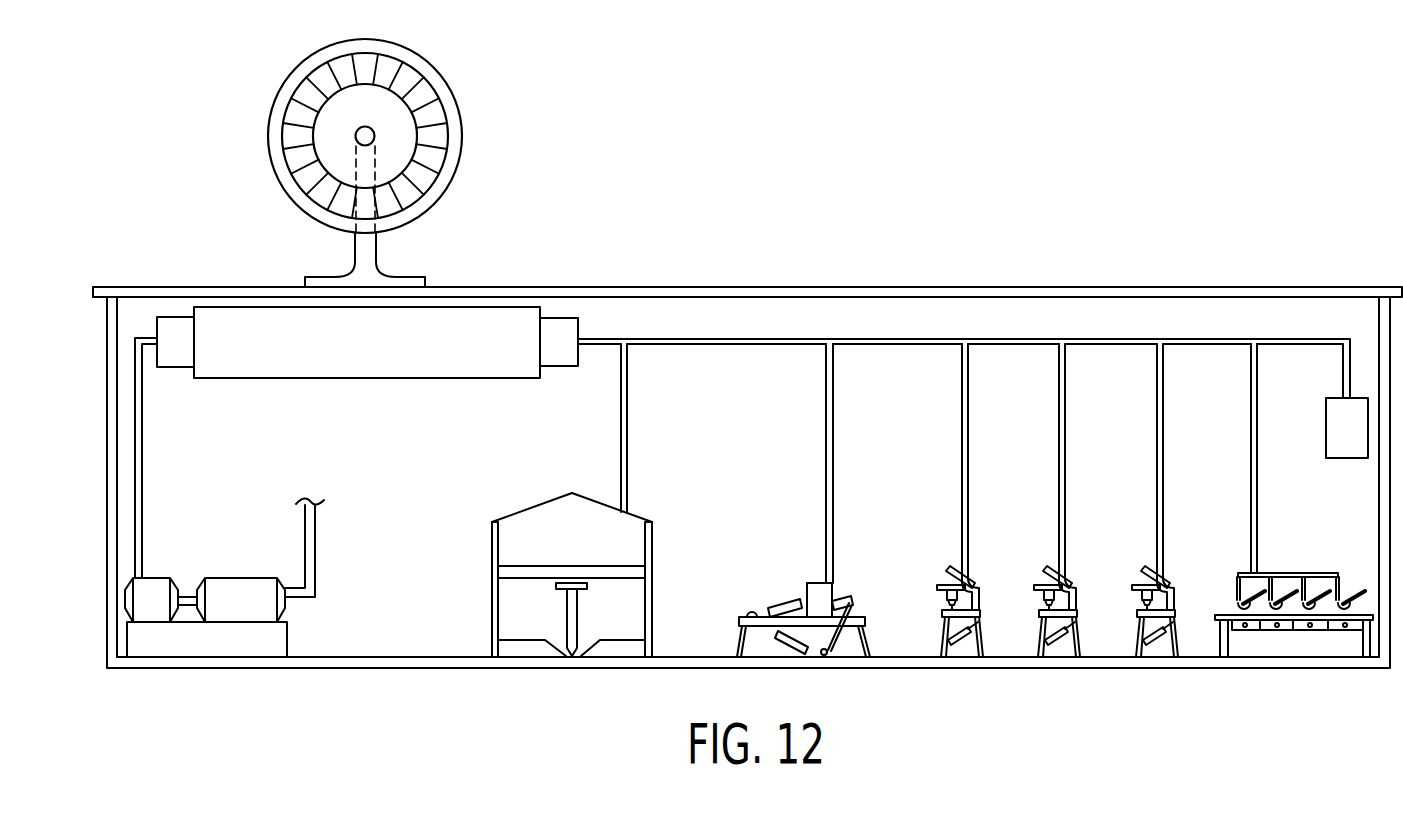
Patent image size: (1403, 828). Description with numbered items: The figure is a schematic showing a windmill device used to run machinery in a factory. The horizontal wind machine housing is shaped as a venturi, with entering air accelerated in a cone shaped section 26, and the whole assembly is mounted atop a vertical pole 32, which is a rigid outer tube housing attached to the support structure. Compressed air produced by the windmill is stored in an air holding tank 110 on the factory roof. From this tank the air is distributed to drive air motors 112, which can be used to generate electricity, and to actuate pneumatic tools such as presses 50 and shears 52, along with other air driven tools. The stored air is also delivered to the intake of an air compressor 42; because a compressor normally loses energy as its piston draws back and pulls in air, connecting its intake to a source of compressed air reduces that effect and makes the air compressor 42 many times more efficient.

The cone shaped section 26 is at (447, 134).
The vertical pole 32 is at (368, 255).
The air holding tank 110 is at (388, 356).
The air motors 112 is at (160, 590).
The shears 52 is at (822, 590).
The presses 50 is at (966, 582).
The air compressor 42 is at (1337, 433).